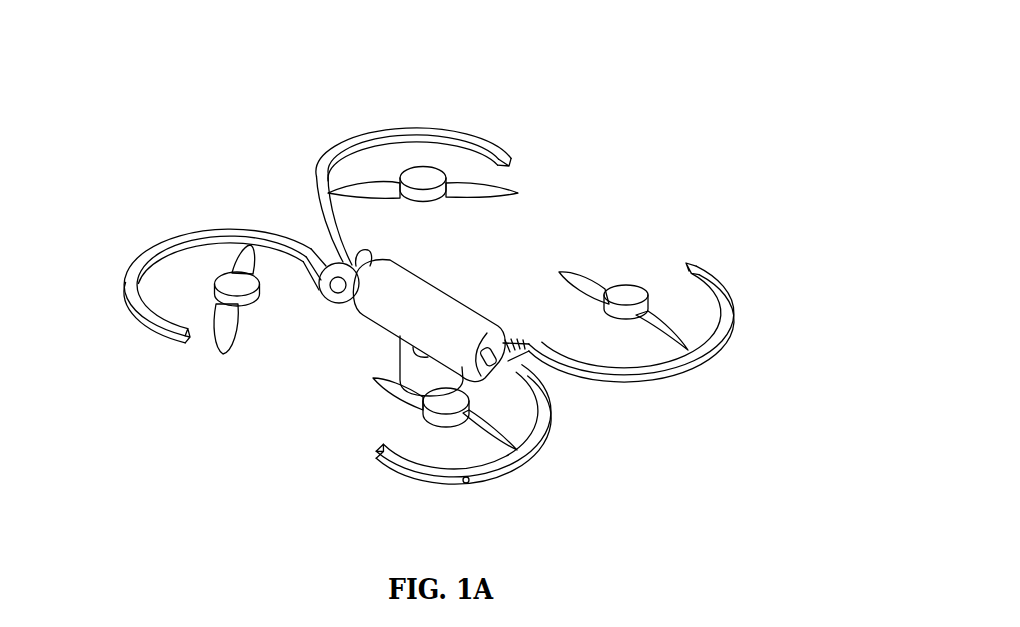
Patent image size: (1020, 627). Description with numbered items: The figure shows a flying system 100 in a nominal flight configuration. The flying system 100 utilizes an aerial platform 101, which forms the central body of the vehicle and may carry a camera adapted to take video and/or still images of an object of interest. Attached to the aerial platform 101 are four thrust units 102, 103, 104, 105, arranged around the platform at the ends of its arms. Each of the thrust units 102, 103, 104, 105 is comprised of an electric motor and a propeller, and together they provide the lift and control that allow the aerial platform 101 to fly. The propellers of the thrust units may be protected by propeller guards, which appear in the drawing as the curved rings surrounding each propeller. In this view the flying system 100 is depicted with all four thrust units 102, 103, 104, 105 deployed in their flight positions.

The flying system 100 is at (760, 104).
The aerial platform 101 is at (458, 289).
The thrust unit 102 is at (421, 167).
The thrust unit 103 is at (628, 284).
The thrust unit 104 is at (229, 272).
The thrust unit 105 is at (423, 414).